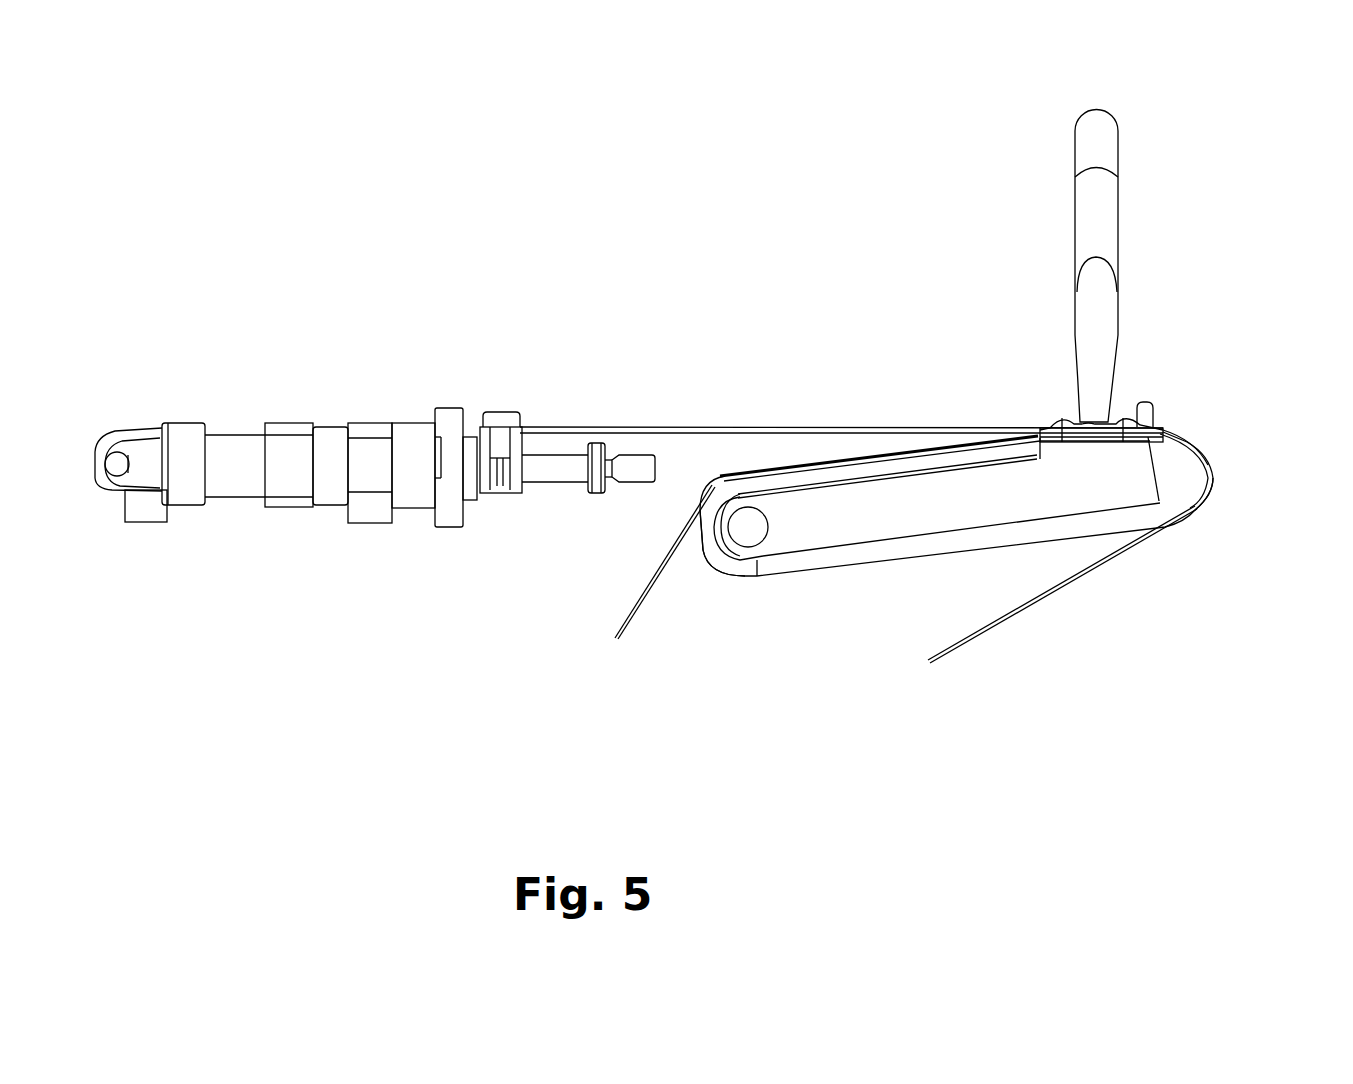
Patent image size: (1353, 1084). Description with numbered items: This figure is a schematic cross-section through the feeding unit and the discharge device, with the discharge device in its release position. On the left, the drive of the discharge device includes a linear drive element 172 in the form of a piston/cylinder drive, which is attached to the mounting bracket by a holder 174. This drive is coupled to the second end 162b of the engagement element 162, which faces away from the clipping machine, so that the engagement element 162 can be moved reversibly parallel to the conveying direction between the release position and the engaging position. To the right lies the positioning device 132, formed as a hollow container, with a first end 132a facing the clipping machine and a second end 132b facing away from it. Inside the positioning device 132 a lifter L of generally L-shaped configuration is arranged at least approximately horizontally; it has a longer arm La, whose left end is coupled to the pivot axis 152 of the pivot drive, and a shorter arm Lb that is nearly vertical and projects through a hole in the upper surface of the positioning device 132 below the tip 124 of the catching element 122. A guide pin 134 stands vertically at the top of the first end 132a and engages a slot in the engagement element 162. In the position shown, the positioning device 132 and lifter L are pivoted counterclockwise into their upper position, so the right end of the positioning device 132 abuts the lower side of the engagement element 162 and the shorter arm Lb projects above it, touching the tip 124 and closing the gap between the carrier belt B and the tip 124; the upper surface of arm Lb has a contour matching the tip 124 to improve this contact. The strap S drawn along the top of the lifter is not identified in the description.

The linear drive element 172 is at (243, 452).
The holder 174 is at (293, 422).
The second end of engagement element 162b is at (510, 428).
The engagement element 162 is at (910, 430).
The strap S is at (897, 448).
The lifter L is at (960, 512).
The longer arm of lifter La is at (890, 510).
The shorter arm of lifter Lb is at (1090, 455).
The pivot axis 152 is at (750, 533).
The second end of positioning device 132b is at (710, 555).
The first end of positioning device 132a is at (1203, 469).
The positioning device 132 is at (1185, 490).
The tip of catching element 124 is at (1098, 420).
The guide pin 134 is at (1147, 413).
The catching element 122 is at (1105, 225).
The carrier belt B is at (1093, 570).